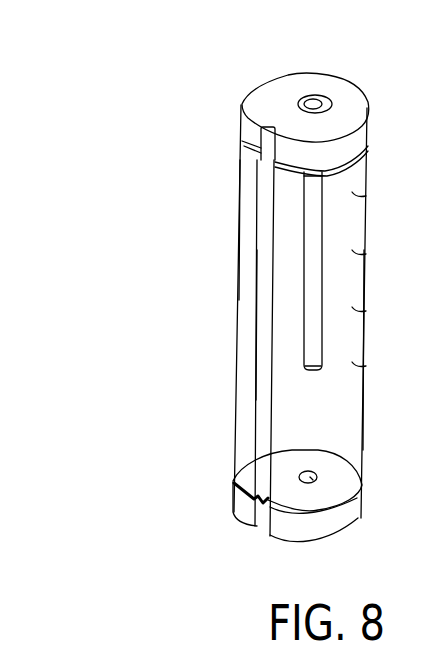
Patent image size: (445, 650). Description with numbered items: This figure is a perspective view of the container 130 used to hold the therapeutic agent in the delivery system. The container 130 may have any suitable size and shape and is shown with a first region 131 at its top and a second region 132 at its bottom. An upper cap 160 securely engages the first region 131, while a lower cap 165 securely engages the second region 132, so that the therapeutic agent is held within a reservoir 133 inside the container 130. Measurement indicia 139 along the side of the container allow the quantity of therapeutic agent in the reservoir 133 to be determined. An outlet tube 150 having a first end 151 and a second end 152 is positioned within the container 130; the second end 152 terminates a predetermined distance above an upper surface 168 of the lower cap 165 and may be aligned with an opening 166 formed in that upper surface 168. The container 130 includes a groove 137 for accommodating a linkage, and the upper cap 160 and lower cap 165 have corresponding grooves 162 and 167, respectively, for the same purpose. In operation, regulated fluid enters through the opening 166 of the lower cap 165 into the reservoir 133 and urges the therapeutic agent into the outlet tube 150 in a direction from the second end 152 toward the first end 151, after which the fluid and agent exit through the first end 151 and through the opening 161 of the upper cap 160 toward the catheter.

The container 130 is at (228, 270).
The first region 131 is at (250, 158).
The second region 132 is at (240, 480).
The reservoir 133 is at (352, 341).
The groove 137 is at (258, 314).
The measurement indicia 139 is at (360, 296).
The outlet tube 150 is at (371, 286).
The first end 151 is at (350, 186).
The second end 152 is at (314, 372).
The upper cap 160 is at (300, 97).
The opening 161 is at (312, 98).
The groove 162 is at (247, 135).
The lower cap 165 is at (301, 515).
The opening 166 is at (313, 478).
The groove 167 is at (258, 528).
The upper surface 168 is at (350, 476).